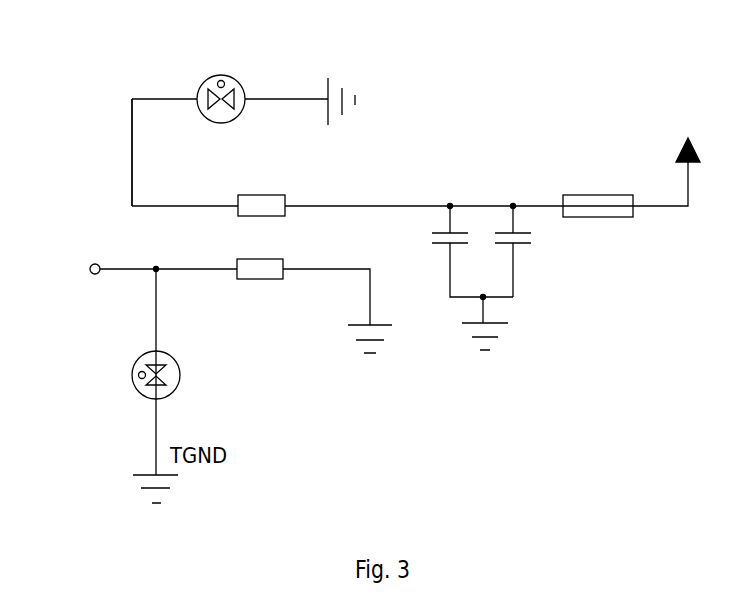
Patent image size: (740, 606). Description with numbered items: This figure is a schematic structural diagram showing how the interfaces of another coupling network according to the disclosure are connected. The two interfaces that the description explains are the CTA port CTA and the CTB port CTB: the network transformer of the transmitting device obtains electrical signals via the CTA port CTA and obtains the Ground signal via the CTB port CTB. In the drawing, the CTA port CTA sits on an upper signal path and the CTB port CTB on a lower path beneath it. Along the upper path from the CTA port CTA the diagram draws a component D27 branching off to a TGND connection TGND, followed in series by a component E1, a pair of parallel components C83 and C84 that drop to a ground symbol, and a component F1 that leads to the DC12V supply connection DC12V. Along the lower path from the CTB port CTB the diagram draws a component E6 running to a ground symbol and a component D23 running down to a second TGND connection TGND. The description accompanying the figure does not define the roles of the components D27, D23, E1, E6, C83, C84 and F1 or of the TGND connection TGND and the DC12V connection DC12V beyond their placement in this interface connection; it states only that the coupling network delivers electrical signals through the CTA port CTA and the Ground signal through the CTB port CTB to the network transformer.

The gas discharge tube GDT-SG75 D27 is at (224, 70).
The gas discharge tube GDT-SG75 D23 is at (97, 369).
The ferrite bead 1K@100MHZ E1 is at (278, 177).
The ferrite bead 1K@100MHZ E6 is at (255, 297).
The capacitor 10uF C83 is at (446, 194).
The capacitor 10uF C84 is at (535, 265).
The fuse Fuse 1 F1 is at (599, 204).
The CTA port CTA is at (157, 152).
The CTB port CTB is at (116, 255).
The protective ground TGND is at (377, 101).
The DC 12V power supply DC12V is at (680, 135).